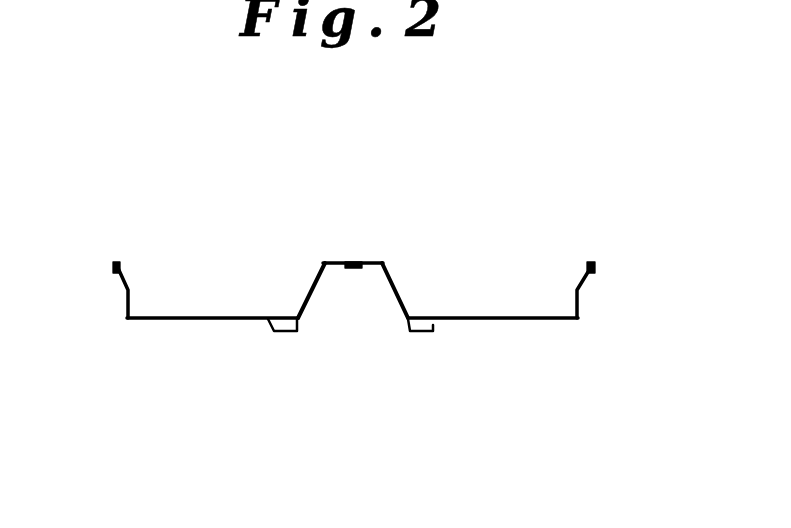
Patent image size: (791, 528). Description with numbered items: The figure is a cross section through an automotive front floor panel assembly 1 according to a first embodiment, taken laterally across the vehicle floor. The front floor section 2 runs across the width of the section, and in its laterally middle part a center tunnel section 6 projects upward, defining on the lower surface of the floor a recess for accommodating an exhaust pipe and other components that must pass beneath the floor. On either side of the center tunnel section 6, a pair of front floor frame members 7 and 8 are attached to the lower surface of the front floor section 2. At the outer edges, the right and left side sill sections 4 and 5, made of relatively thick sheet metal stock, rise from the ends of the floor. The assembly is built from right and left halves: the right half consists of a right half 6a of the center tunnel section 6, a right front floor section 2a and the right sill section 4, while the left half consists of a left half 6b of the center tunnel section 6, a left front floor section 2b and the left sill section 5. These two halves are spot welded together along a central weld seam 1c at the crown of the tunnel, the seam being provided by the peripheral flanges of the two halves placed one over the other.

The front floor panel assembly 1 is at (490, 186).
The central weld seam 1c is at (351, 258).
The front floor section 2 is at (493, 420).
The right front floor section 2a is at (488, 320).
The left front floor section 2b is at (193, 320).
The right side sill section 4 is at (578, 305).
The left side sill section 5 is at (127, 294).
The center tunnel section 6 is at (442, 213).
The right half of center tunnel section 6a is at (400, 290).
The left half of center tunnel section 6b is at (303, 290).
The front floor frame member 7 is at (419, 331).
The front floor frame member 8 is at (283, 331).